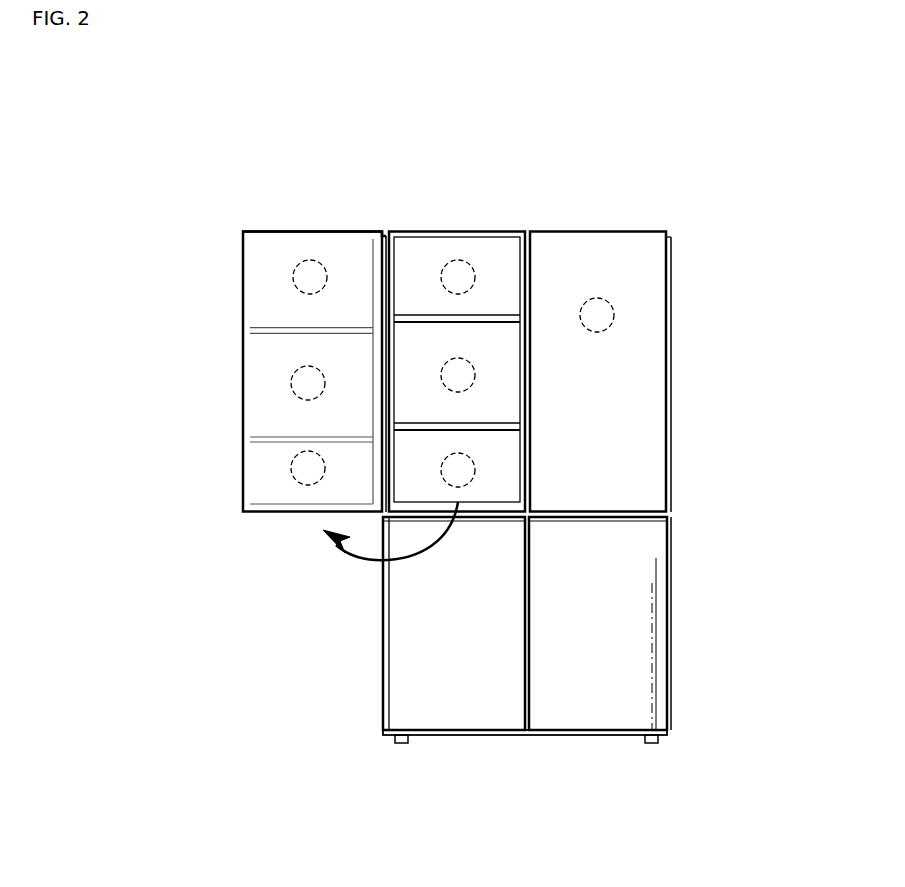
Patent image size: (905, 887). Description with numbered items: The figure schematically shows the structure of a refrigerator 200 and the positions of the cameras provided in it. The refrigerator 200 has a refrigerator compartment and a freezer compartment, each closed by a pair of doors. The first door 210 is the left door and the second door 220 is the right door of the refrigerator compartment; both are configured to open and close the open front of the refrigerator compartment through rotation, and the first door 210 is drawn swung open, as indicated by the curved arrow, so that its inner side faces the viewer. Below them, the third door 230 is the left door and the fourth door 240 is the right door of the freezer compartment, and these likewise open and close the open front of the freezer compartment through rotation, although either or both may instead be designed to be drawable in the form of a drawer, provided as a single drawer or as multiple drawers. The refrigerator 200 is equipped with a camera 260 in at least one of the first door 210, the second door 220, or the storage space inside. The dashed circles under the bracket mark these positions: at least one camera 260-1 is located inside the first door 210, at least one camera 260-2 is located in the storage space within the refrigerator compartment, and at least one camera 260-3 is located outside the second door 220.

The refrigerator 200 is at (732, 134).
The first door 210 is at (242, 372).
The second door 220 is at (655, 417).
The third door 230 is at (410, 630).
The fourth door 240 is at (643, 587).
The camera 260 is at (630, 172).
The camera 260-1 is at (310, 268).
The camera 260-2 is at (457, 267).
The camera 260-3 is at (606, 327).